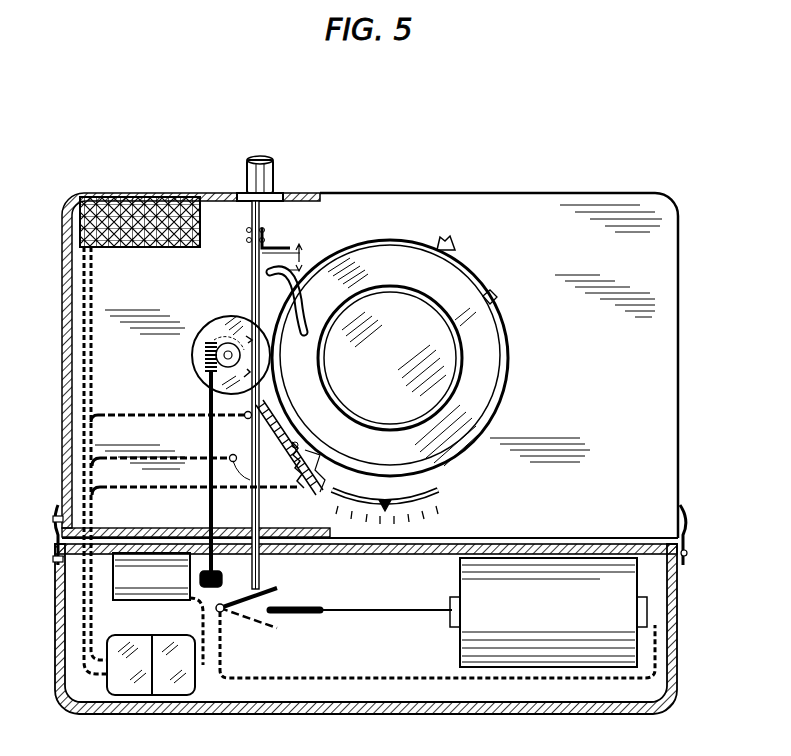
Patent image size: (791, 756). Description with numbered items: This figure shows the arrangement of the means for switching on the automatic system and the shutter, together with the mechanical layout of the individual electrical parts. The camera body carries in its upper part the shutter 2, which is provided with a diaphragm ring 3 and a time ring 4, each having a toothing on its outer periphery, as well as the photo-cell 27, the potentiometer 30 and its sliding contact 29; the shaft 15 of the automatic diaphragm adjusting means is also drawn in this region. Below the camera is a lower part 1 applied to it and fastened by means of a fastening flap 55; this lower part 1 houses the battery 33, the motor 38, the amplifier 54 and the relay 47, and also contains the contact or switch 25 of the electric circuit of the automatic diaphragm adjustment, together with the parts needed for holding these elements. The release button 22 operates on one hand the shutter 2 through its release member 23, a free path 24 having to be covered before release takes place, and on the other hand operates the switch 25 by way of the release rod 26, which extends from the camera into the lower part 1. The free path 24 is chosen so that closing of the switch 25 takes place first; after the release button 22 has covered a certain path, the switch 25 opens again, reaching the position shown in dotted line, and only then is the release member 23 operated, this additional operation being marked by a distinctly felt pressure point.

The lower part 1 is at (432, 702).
The shutter 2 is at (486, 344).
The diaphragm ring 3 is at (441, 457).
The time ring 4 is at (500, 393).
The shaft 15 is at (209, 498).
The release button 22 is at (250, 171).
The release member 23 is at (272, 271).
The free path 24 is at (286, 248).
The switch 25 is at (280, 600).
The release rod 26 is at (254, 301).
The photo-cell 27 is at (156, 248).
The sliding contact 29 is at (299, 447).
The potentiometer 30 is at (266, 428).
The battery 33 is at (476, 633).
The motor 38 is at (165, 588).
The relay 47 is at (183, 692).
The amplifier 54 is at (125, 692).
The fastening flap 55 is at (688, 540).